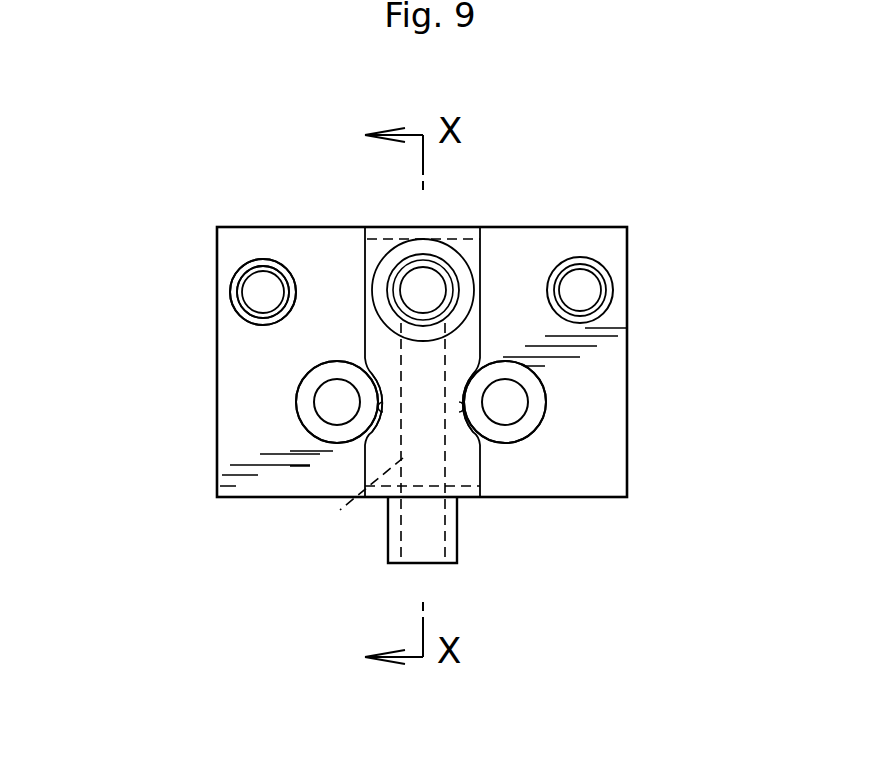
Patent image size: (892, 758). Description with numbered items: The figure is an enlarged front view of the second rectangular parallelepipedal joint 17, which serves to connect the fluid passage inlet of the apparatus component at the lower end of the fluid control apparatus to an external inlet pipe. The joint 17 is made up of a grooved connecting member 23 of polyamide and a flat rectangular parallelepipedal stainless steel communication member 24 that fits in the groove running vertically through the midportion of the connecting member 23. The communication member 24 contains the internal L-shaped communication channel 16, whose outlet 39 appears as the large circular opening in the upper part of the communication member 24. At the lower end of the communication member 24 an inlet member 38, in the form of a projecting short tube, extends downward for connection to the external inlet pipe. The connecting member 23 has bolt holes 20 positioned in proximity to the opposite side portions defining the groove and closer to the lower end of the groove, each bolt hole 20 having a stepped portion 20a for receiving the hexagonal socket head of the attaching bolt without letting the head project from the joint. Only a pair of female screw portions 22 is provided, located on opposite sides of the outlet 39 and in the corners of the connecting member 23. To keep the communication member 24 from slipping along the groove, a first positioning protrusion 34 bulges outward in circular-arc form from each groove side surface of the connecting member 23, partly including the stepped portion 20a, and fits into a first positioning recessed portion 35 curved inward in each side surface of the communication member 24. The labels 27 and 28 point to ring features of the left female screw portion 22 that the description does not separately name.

The L-shaped communication channel 16 is at (348, 503).
The second rectangular parallelepipedal joint 17 is at (687, 238).
The bolt hole 20 is at (320, 393).
The stepped portion 20a is at (298, 411).
The female screw portion 22 is at (286, 266).
The connecting member 23 is at (608, 468).
The communication member 24 is at (470, 463).
The hole outer wall 27 is at (232, 291).
The hole inner wall 28 is at (267, 276).
The first positioning protrusion 34 is at (382, 380).
The first positioning recessed portion 35 is at (378, 408).
The inlet member 38 is at (388, 532).
The outlet 39 is at (432, 282).